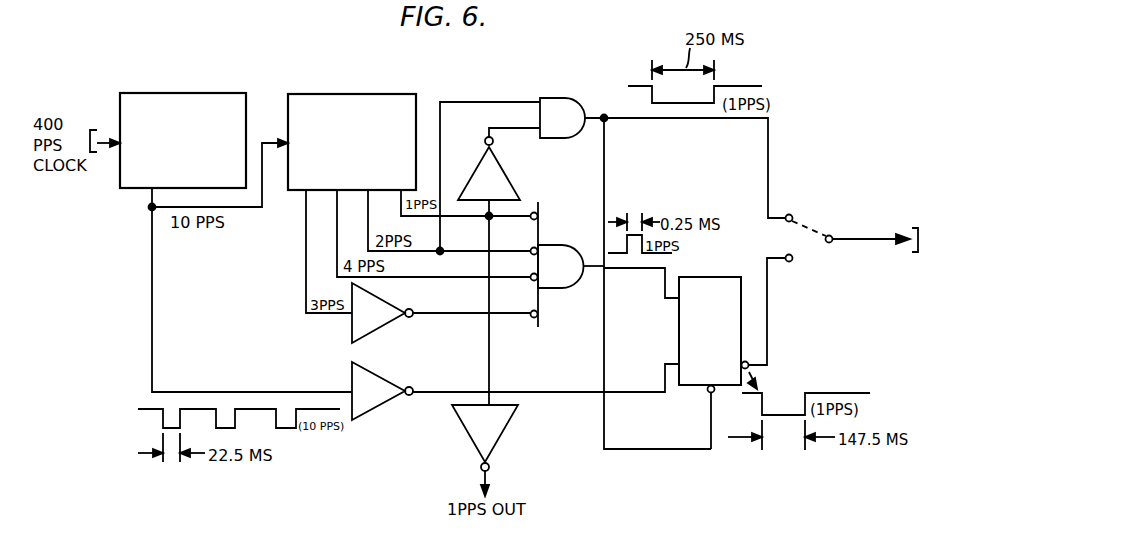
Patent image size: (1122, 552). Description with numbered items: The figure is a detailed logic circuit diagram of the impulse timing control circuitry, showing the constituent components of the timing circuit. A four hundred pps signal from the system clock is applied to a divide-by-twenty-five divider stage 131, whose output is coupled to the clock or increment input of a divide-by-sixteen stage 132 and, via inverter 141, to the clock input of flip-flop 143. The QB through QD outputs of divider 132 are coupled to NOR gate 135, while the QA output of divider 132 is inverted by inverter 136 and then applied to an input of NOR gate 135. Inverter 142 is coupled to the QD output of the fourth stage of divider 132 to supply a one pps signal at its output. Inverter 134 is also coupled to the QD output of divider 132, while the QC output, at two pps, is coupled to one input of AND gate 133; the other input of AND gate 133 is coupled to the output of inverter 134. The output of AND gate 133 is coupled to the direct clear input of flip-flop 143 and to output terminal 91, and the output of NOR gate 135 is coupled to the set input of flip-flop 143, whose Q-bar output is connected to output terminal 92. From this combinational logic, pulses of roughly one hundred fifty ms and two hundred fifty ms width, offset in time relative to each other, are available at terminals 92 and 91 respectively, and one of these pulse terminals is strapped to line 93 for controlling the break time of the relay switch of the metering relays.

The divide-by-twenty-five divider stage 131 is at (180, 93).
The divide-by-sixteen stage 132 is at (347, 94).
The AND gate 133 is at (572, 98).
The inverter 134 is at (507, 172).
The NOR gate 135 is at (560, 245).
The inverter 136 is at (372, 330).
The inverter 141 is at (370, 406).
The inverter 142 is at (497, 440).
The flip-flop 143 is at (717, 277).
The output terminal 91 is at (791, 215).
The output terminal 92 is at (790, 262).
The line 93 is at (891, 243).